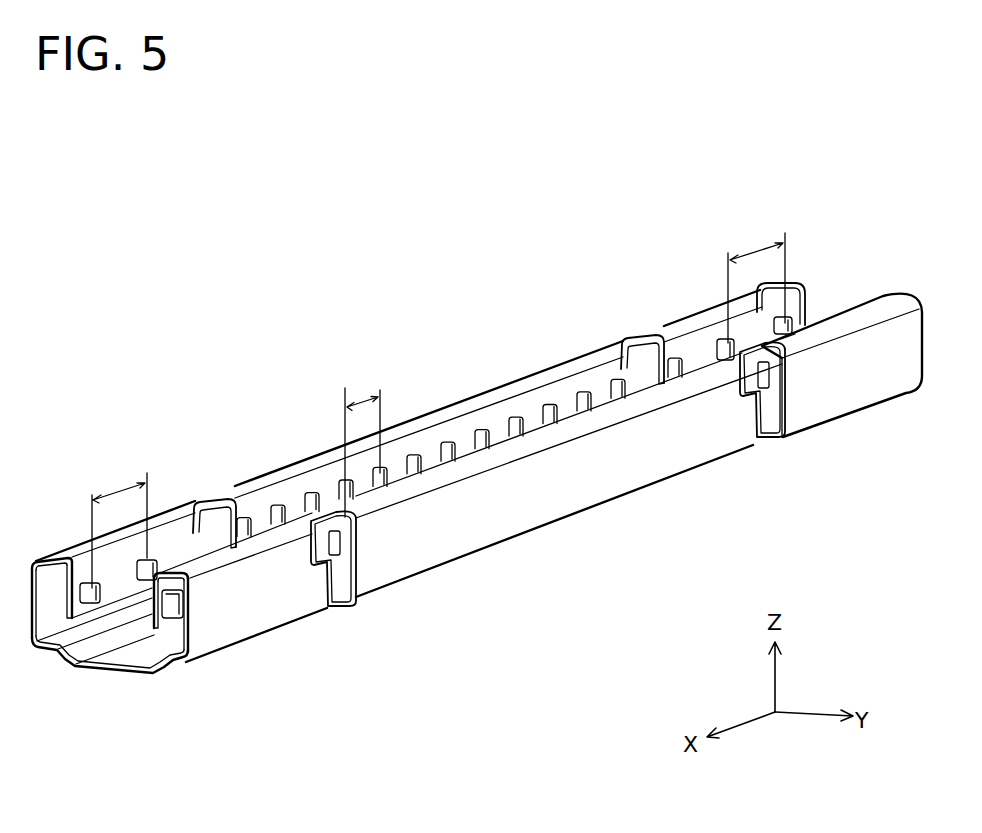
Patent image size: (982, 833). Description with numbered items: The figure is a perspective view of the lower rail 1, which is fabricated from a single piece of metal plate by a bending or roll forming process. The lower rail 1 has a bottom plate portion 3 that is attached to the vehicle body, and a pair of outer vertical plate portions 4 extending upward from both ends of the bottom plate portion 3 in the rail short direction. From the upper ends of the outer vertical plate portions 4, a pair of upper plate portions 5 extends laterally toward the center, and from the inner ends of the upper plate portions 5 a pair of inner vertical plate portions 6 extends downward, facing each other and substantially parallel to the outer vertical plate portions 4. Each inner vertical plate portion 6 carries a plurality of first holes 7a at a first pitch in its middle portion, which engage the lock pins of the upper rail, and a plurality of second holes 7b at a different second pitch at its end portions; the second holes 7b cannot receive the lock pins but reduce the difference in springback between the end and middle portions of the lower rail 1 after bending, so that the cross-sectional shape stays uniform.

The lower rail 1 is at (462, 490).
The bottom plate portion 3 is at (118, 672).
The outer vertical plate portions 4 is at (30, 600).
The upper plate portions 5 is at (58, 556).
The inner vertical plate portions 6 is at (82, 605).
The first holes 7a is at (274, 512).
The second holes 7b is at (88, 580).